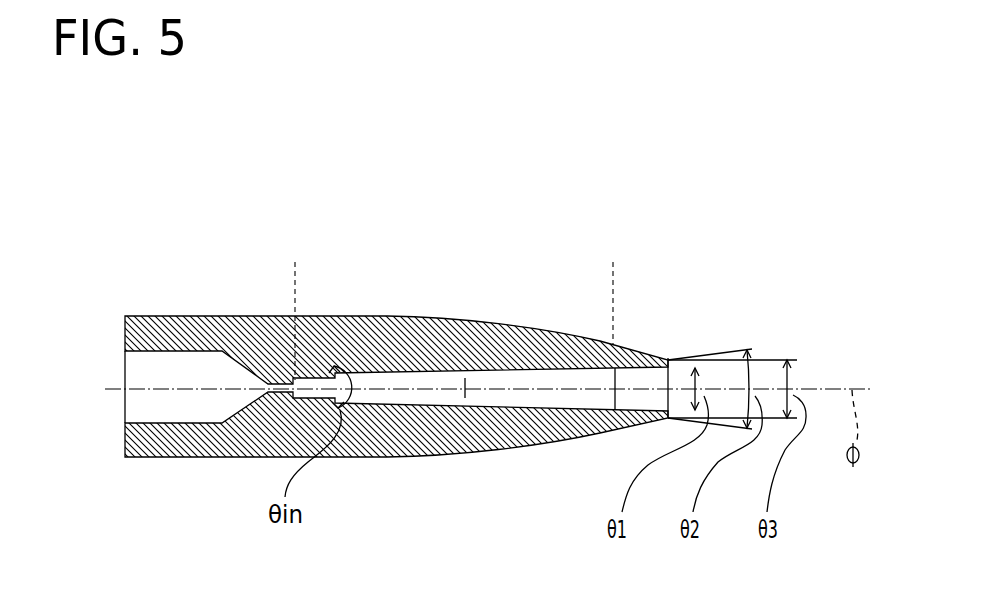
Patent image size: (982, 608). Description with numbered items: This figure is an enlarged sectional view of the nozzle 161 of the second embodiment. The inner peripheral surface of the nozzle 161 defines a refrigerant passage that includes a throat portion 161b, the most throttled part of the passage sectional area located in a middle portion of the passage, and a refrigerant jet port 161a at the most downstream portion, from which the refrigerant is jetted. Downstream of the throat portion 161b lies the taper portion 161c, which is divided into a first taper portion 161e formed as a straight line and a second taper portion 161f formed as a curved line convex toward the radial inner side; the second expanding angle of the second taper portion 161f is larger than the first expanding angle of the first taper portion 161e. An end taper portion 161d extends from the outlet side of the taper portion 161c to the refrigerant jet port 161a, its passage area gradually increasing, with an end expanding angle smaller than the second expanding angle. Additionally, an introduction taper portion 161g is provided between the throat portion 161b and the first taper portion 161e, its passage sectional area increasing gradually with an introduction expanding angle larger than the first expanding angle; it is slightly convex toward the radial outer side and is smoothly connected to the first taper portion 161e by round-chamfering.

The nozzle 161 is at (663, 240).
The refrigerant jet port 161a is at (650, 364).
The throat portion 161b is at (266, 382).
The taper portion 161c is at (613, 262).
The end taper portion 161d is at (690, 358).
The first taper portion 161e is at (398, 366).
The second taper portion 161f is at (560, 337).
The introduction taper portion 161g is at (290, 375).